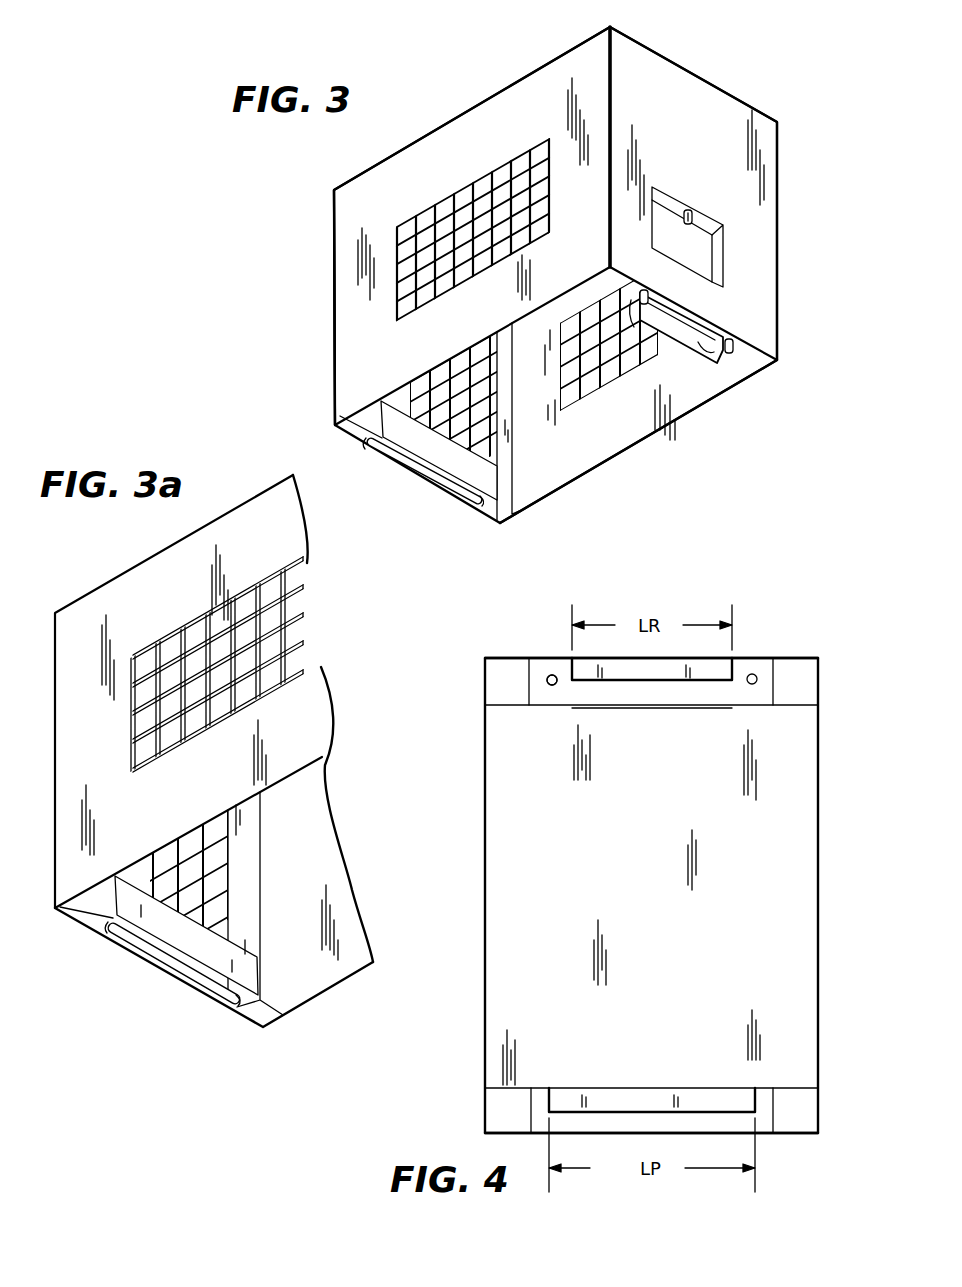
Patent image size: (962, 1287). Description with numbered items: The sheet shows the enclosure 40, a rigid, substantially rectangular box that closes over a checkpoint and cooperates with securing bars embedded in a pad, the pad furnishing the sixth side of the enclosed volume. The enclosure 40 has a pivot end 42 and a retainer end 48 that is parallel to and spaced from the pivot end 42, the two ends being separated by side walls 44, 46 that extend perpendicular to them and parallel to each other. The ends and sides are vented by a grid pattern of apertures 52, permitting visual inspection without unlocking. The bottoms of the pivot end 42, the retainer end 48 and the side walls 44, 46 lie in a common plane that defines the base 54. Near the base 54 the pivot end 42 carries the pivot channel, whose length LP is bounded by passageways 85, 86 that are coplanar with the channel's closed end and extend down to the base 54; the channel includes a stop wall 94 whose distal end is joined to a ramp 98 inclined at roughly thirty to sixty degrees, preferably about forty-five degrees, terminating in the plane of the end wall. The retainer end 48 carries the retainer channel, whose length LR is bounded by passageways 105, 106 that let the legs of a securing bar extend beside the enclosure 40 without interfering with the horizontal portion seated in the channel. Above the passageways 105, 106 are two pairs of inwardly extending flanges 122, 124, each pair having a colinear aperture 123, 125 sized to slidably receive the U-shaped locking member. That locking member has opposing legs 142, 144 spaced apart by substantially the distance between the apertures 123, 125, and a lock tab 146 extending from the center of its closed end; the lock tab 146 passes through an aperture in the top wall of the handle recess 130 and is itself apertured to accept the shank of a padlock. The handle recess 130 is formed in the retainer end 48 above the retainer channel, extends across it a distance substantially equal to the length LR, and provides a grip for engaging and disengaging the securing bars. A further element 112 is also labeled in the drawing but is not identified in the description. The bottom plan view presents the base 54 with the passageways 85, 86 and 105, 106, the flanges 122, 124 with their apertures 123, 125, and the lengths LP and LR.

In FIG. 3, the enclosure 40 is at (766, 68).
In FIG. 3, the pivot end 42 is at (334, 292).
In FIG. 4, the pivot end 42 is at (764, 1134).
In FIG. 3, the side wall 44 is at (559, 468).
In FIG. 3, the side wall 46 is at (478, 124).
In FIG. 3A, the side wall 46 is at (250, 518).
In FIG. 3, the retainer end 48 is at (764, 300).
In FIG. 4, the retainer end 48 is at (742, 658).
In FIG. 3, the grid pattern of apertures 52 is at (443, 296).
In FIG. 3A, the grid pattern of apertures 52 is at (308, 632).
In FIG. 3, the base 54 is at (640, 450).
In FIG. 3, the passageway 85 is at (368, 442).
In FIG. 3A, the passageway 85 is at (231, 1013).
In FIG. 4, the passageway 85 is at (767, 1102).
In FIG. 3, the passageway 86 is at (476, 498).
In FIG. 3A, the passageway 86 is at (108, 930).
In FIG. 4, the passageway 86 is at (538, 1103).
In FIG. 3, the stop wall 94 is at (381, 444).
In FIG. 3A, the stop wall 94 is at (112, 926).
In FIG. 3, the ramp 98 is at (446, 481).
In FIG. 3A, the ramp 98 is at (183, 960).
In FIG. 4, the passageway 105 is at (752, 664).
In FIG. 4, the passageway 106 is at (552, 672).
In FIG. 3, the support bar 112 is at (709, 365).
In FIG. 4, the flanges 122 is at (540, 700).
In FIG. 4, the aperture 123 is at (547, 679).
In FIG. 4, the flanges 124 is at (758, 700).
In FIG. 4, the aperture 125 is at (757, 679).
In FIG. 3, the handle recess 130 is at (700, 250).
In FIG. 3, the leg 142 is at (733, 355).
In FIG. 3, the leg 144 is at (641, 306).
In FIG. 3, the lock tab 146 is at (700, 211).